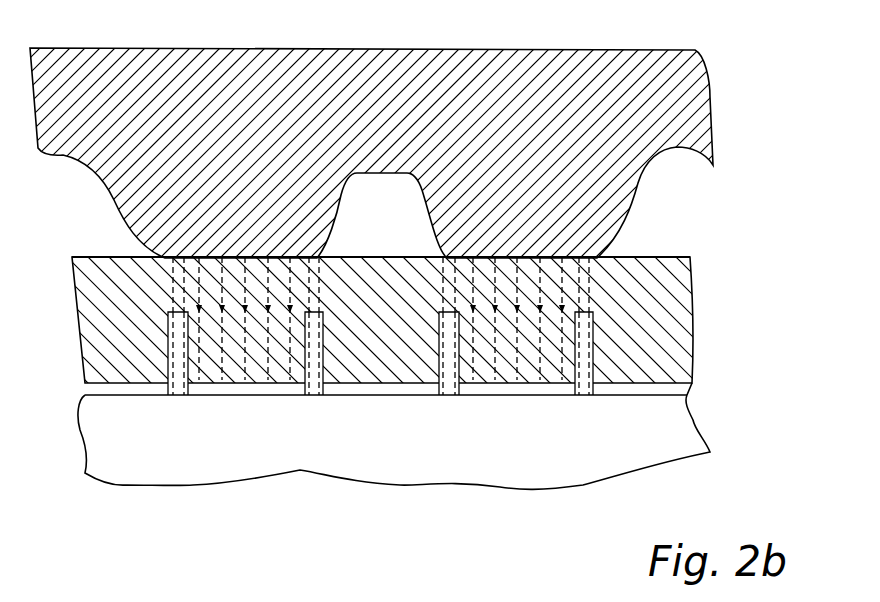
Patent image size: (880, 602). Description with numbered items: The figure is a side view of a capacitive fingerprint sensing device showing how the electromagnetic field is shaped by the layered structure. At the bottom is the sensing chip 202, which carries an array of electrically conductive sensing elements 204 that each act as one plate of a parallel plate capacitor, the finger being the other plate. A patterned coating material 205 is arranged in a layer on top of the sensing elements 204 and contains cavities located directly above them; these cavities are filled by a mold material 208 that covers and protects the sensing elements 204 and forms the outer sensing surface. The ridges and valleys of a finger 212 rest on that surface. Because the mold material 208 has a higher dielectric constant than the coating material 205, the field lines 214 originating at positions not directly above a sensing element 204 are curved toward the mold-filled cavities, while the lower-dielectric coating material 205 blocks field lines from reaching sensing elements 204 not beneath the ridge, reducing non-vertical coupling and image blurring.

The sensing chip 202 is at (668, 430).
The sensing elements 204 is at (546, 390).
The coating material 205 is at (178, 385).
The mold material 208 is at (672, 340).
The finger 212 is at (638, 183).
The field lines 214 is at (593, 270).